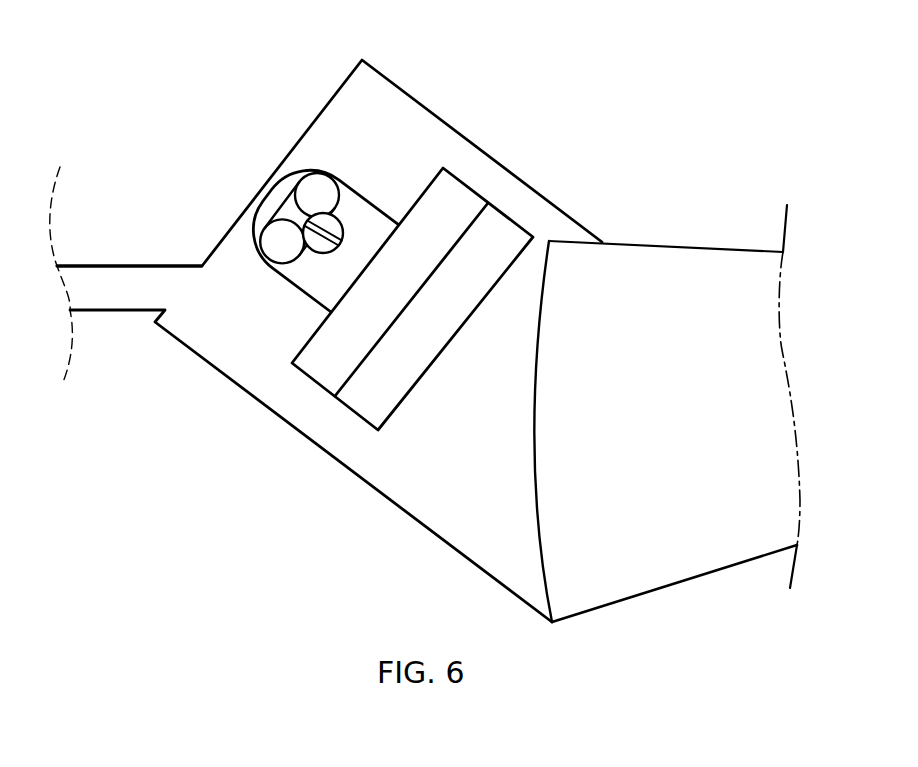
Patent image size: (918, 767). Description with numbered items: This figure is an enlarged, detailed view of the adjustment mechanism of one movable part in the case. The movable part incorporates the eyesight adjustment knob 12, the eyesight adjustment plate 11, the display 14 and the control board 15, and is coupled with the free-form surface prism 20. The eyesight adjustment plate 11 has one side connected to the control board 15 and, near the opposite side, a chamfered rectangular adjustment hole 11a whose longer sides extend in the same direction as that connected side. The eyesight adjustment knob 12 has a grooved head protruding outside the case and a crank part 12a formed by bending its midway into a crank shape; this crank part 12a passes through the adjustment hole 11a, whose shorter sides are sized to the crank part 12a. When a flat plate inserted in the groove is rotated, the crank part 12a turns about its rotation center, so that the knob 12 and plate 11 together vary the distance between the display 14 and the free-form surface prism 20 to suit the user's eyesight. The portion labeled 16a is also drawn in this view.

The eyesight adjustment plate 11 is at (352, 202).
The adjustment hole 11a is at (281, 248).
The eyesight adjustment knob 12 is at (302, 230).
The crank part 12a is at (303, 203).
The display 14 is at (510, 215).
The control board 15 is at (467, 183).
The wall portion 16a is at (128, 265).
The free-form surface prism 20 is at (655, 265).